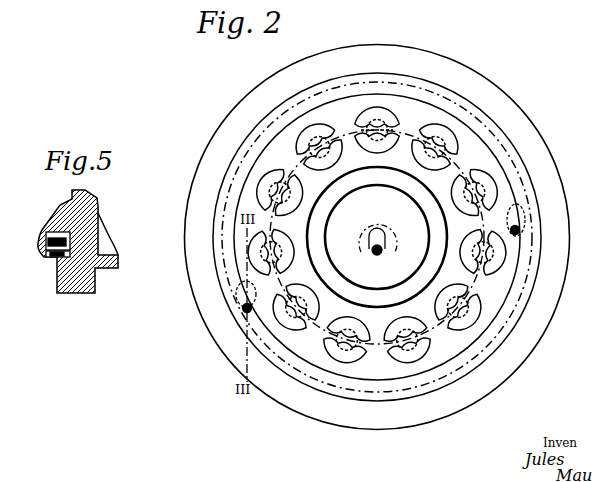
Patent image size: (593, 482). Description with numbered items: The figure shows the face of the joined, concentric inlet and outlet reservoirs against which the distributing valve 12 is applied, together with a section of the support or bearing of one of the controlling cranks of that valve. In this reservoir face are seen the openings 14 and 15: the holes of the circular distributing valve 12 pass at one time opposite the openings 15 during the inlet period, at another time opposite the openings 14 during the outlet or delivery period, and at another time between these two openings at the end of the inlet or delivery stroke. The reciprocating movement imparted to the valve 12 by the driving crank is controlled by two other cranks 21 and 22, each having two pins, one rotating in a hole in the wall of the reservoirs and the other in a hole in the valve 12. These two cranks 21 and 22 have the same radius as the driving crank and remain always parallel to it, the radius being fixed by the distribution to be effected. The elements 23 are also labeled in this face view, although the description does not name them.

In FIG. 5, the distributing valve 12 is at (66, 291).
In FIG. 2, the outlet openings 14 is at (379, 114).
In FIG. 2, the inlet openings 15 is at (380, 149).
In FIG. 2, the controlling crank 21 is at (241, 301).
In FIG. 5, the controlling crank 21 is at (57, 253).
In FIG. 2, the controlling crank 22 is at (521, 226).
In FIG. 2, the rollers 23 is at (459, 323).